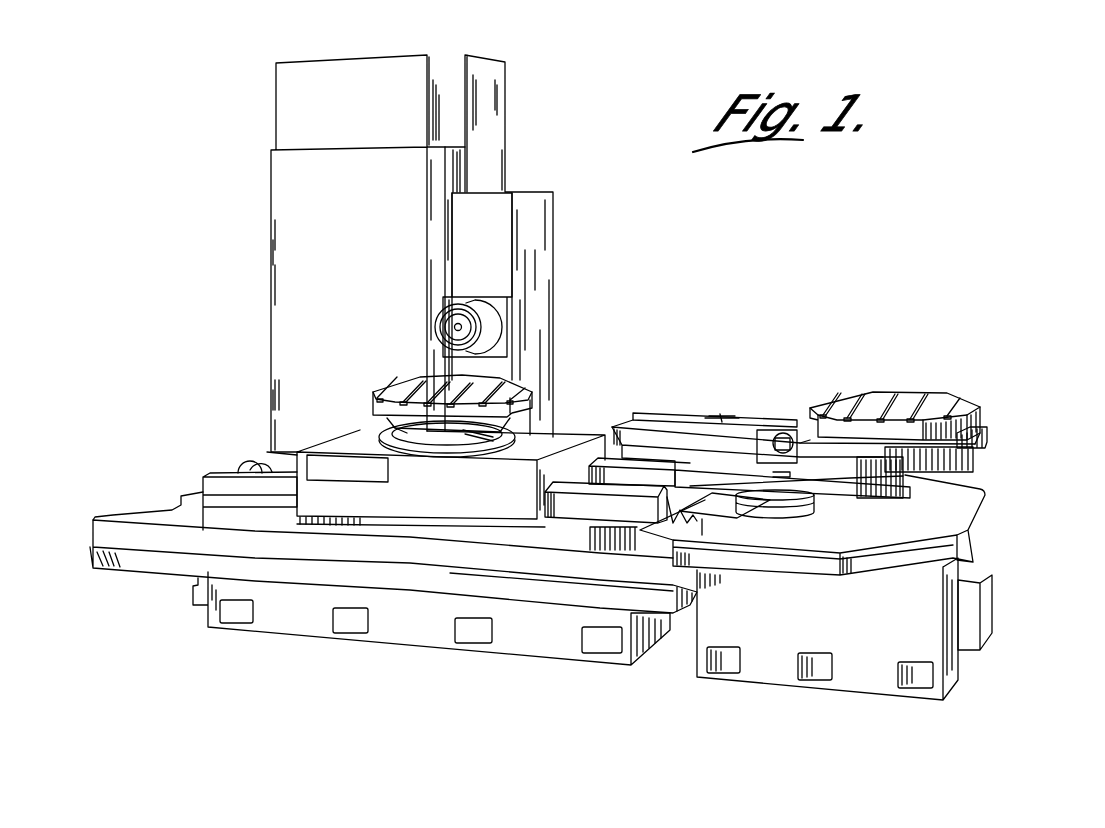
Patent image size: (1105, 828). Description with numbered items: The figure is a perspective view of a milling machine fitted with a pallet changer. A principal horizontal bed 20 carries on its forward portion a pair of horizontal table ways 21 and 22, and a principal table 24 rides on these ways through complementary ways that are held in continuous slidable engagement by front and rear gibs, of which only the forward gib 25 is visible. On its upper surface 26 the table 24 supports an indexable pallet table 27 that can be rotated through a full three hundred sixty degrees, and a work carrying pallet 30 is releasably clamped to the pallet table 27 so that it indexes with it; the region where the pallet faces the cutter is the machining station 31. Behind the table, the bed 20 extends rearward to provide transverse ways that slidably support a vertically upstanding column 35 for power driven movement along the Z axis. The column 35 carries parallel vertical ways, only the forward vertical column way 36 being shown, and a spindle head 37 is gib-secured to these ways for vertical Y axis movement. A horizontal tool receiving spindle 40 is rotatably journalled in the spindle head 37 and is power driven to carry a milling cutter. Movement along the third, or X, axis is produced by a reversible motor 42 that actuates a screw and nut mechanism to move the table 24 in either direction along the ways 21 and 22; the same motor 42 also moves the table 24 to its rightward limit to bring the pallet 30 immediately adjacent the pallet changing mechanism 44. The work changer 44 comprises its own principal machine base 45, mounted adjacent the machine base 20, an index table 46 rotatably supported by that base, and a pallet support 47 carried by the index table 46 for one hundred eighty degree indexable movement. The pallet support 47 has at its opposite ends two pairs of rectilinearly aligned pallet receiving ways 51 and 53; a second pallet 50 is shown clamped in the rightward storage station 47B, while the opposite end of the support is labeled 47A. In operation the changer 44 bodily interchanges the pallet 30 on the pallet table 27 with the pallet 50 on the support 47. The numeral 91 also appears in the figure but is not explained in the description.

The horizontal bed 20 is at (423, 577).
The horizontal table way 21 is at (580, 502).
The horizontal table way 22 is at (633, 472).
The principal table 24 is at (514, 512).
The forward gib 25 is at (363, 518).
The upper surface 26 is at (342, 443).
The indexable pallet table 27 is at (435, 434).
The work carrying pallet 30 is at (408, 390).
The machining station 31 is at (407, 358).
The vertically upstanding column 35 is at (351, 247).
The forward vertical column way 36 is at (450, 158).
The spindle head 37 is at (486, 236).
The horizontal tool receiving spindle 40 is at (458, 326).
The reversible motor 42 is at (268, 462).
The pallet changing mechanism 44 is at (819, 378).
The principal machine base 45 is at (807, 619).
The index table 46 is at (770, 503).
The pallet support 47 is at (877, 448).
The first pallet station 47A is at (689, 391).
The rightward storage station 47B is at (987, 381).
The pallet 50 is at (912, 400).
The pallet receiving ways 51 is at (632, 414).
The pallet receiving ways 53 is at (987, 437).
The clamp 91 is at (727, 415).